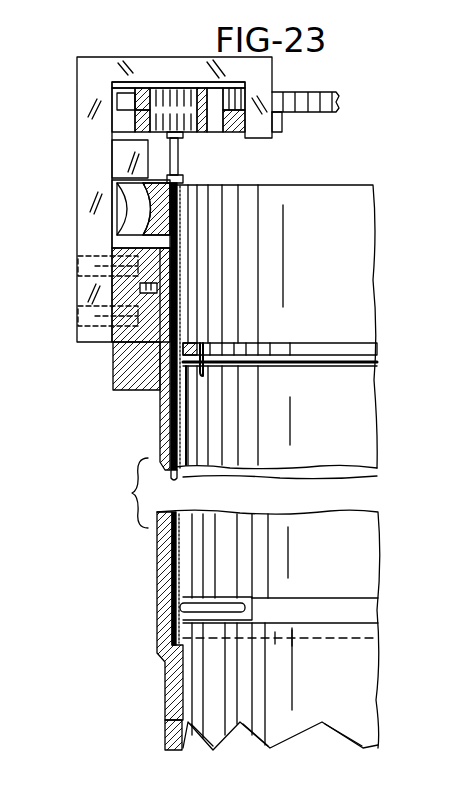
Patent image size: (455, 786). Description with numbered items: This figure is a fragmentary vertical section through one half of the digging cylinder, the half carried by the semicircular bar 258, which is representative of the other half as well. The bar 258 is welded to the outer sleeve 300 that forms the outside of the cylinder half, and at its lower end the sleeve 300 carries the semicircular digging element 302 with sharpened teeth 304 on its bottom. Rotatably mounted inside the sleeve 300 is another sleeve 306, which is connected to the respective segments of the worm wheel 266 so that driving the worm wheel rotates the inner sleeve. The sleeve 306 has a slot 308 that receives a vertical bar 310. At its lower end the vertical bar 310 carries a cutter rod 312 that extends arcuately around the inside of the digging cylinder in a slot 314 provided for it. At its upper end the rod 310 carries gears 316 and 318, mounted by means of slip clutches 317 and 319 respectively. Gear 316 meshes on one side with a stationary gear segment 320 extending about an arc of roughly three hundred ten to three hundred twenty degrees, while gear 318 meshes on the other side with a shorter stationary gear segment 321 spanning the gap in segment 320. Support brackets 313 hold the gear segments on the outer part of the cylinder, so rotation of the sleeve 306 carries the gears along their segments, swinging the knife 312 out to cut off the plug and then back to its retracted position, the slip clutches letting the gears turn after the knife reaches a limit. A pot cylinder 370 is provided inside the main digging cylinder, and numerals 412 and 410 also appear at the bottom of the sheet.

The support brackets 313 is at (104, 56).
The slip clutch 317 is at (168, 88).
The stationary gear segment 320 is at (122, 82).
The gear 316 is at (148, 99).
The gear 318 is at (146, 118).
The slip clutch 319 is at (150, 132).
The stationary gear segment 321 is at (229, 134).
The worm wheel 266 is at (133, 210).
The sleeve 306 is at (357, 320).
The semicircular bar 258 is at (123, 372).
The pot cylinder 370 is at (184, 400).
The sleeve 300 is at (160, 415).
The vertical bar 310 is at (172, 432).
The slot 308 is at (177, 479).
The slot 314 is at (227, 602).
The cutter rod 312 is at (204, 606).
The digging element 302 is at (172, 673).
The teeth 304 is at (181, 735).
The grid 412 is at (323, 777).
The grid 410 is at (393, 777).